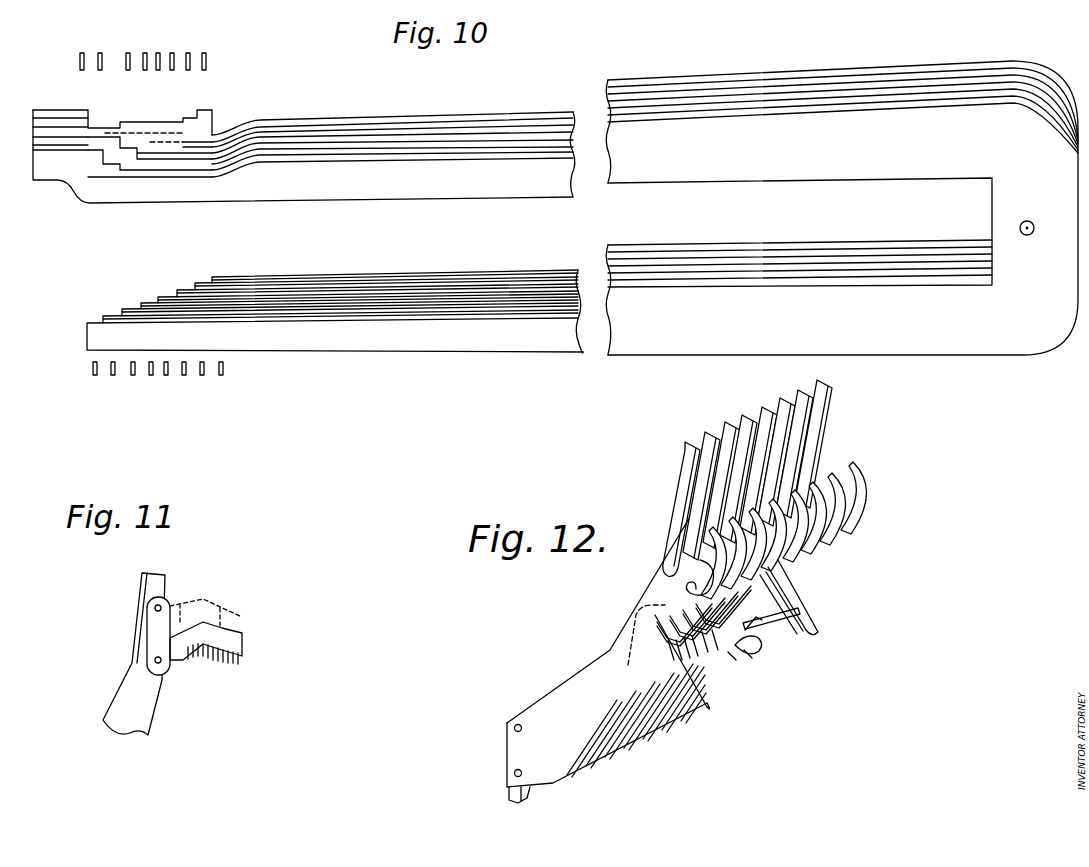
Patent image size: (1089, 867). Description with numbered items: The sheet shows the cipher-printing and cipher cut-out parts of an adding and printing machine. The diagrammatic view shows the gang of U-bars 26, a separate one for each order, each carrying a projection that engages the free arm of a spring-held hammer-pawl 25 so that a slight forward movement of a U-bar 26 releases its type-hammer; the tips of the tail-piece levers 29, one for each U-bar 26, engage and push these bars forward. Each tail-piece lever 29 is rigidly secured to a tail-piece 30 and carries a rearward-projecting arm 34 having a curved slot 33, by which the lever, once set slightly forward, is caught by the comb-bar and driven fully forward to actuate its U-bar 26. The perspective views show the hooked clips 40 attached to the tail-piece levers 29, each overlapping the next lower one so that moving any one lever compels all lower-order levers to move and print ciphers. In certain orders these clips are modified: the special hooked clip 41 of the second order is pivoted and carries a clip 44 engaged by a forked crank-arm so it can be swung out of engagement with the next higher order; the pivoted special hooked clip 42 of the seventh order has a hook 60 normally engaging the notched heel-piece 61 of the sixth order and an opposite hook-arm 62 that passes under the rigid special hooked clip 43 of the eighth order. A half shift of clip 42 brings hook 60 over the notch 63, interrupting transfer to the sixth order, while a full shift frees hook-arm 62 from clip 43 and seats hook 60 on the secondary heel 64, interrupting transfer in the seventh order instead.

In FIG. 10, the hammer-pawl 25 is at (172, 52).
In FIG. 10, the U-bar 26 is at (270, 277).
In FIG. 10, the tail-piece lever 29 is at (184, 376).
In FIG. 11, the tail-piece lever 29 is at (140, 578).
In FIG. 12, the tail-piece lever 29 is at (763, 405).
In FIG. 12, the tail-piece 30 is at (532, 793).
In FIG. 12, the curved slot 33 is at (700, 577).
In FIG. 12, the arm 34 is at (847, 511).
In FIG. 11, the hooked clip 40 is at (240, 636).
In FIG. 12, the hooked clip 40 is at (713, 657).
In FIG. 12, the special hooked clip 41 is at (655, 658).
In FIG. 12, the special hooked clip 42 is at (773, 630).
In FIG. 12, the special hooked clip 43 is at (808, 578).
In FIG. 12, the clip 44 is at (668, 717).
In FIG. 12, the hook 60 is at (756, 637).
In FIG. 12, the notched heel-piece 61 is at (750, 628).
In FIG. 12, the hook-arm 62 is at (798, 622).
In FIG. 12, the notch 63 is at (748, 652).
In FIG. 12, the secondary heel 64 is at (733, 655).